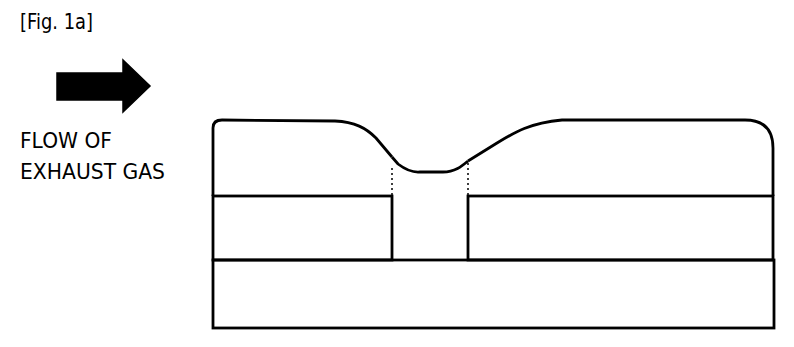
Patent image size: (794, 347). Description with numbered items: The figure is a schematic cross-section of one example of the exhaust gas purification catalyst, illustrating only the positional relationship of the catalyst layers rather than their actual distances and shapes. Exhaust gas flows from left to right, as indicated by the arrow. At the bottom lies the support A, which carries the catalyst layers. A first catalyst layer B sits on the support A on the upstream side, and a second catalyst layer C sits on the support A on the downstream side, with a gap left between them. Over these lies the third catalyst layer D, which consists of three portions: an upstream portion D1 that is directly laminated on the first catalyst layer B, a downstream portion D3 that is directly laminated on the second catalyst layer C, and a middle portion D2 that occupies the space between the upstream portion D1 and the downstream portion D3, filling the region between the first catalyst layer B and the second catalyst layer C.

The support A is at (493, 294).
The first catalyst layer B is at (302, 228).
The second catalyst layer C is at (620, 228).
The third catalyst layer D is at (493, 153).
The upstream portion of the third catalyst layer D1 is at (302, 158).
The middle portion of the third catalyst layer D2 is at (430, 200).
The downstream portion of the third catalyst layer D3 is at (620, 158).